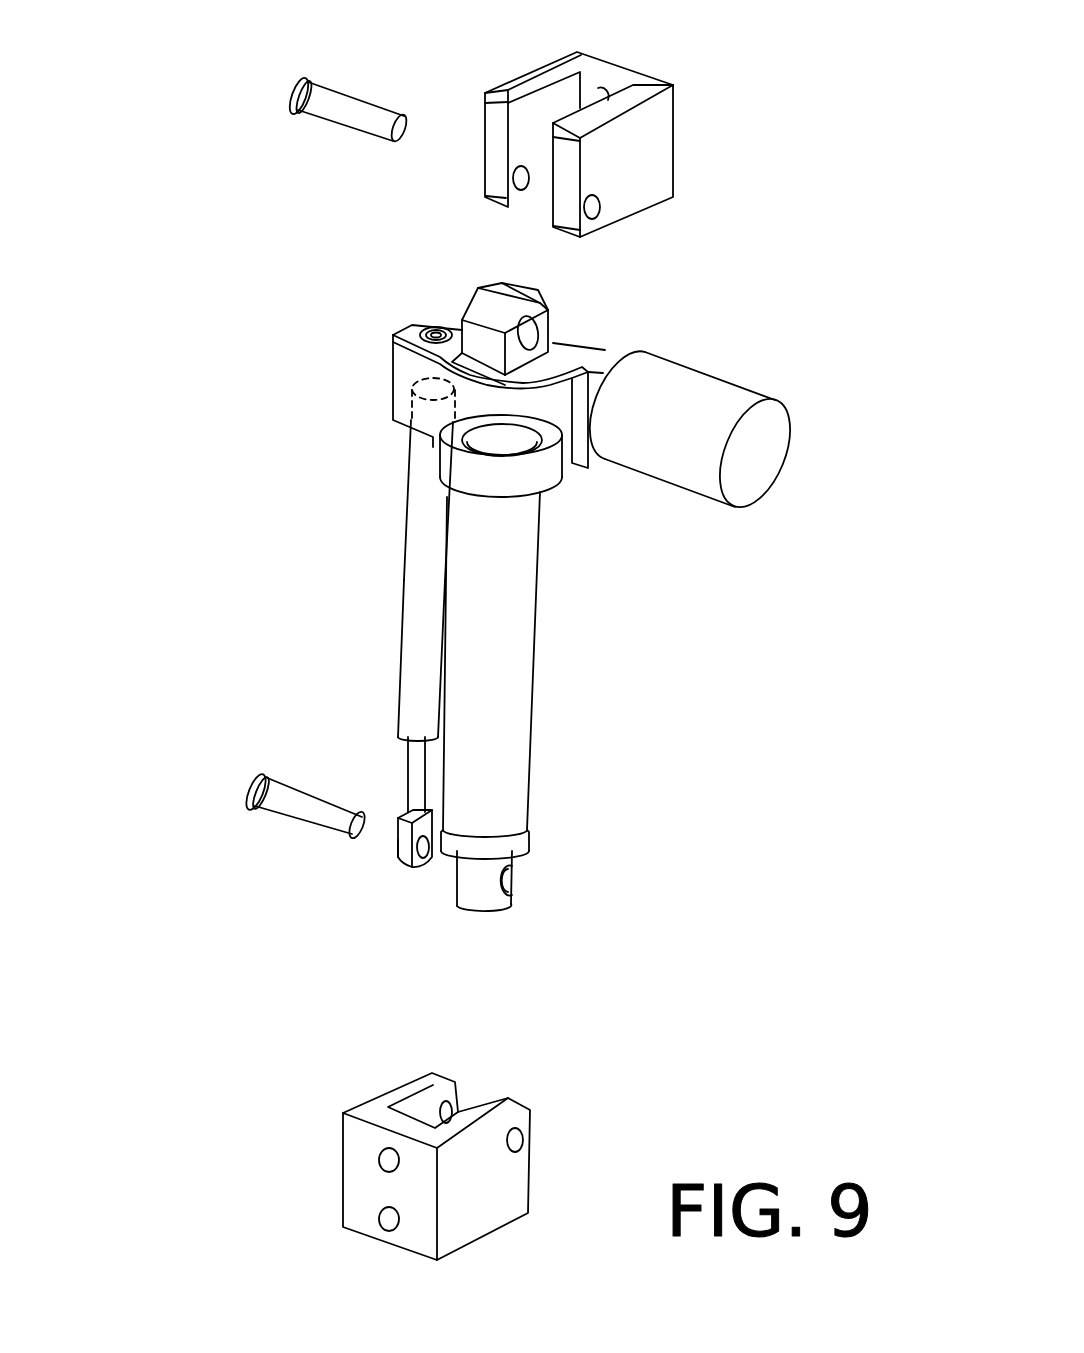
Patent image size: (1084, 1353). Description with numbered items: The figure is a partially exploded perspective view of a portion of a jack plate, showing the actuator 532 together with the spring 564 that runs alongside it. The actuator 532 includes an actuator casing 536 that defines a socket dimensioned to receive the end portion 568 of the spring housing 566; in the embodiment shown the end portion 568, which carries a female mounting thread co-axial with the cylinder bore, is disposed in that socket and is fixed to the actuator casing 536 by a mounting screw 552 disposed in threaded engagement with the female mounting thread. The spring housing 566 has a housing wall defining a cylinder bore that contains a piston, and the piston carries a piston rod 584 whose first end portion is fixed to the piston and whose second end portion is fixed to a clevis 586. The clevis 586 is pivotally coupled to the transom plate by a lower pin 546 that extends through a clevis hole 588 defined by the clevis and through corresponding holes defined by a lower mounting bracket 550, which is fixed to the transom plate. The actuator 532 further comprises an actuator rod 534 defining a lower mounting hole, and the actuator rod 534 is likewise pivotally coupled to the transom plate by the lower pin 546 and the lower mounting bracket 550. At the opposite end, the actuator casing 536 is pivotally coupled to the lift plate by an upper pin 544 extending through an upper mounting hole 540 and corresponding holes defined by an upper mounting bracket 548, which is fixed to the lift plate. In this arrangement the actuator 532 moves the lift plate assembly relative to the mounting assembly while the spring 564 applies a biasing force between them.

The actuator 532 is at (412, 385).
The actuator rod 534 is at (472, 912).
The actuator casing 536 is at (578, 345).
The upper mounting hole 540 is at (505, 880).
The upper pin 544 is at (343, 111).
The lower pin 546 is at (300, 810).
The upper mounting bracket 548 is at (672, 143).
The lower mounting bracket 550 is at (530, 1185).
The mounting screw 552 is at (435, 330).
The spring 564 is at (407, 479).
The spring housing 566 is at (404, 582).
The end portion 568 is at (412, 394).
The piston rod 584 is at (395, 775).
The clevis 586 is at (397, 838).
The clevis hole 588 is at (423, 850).